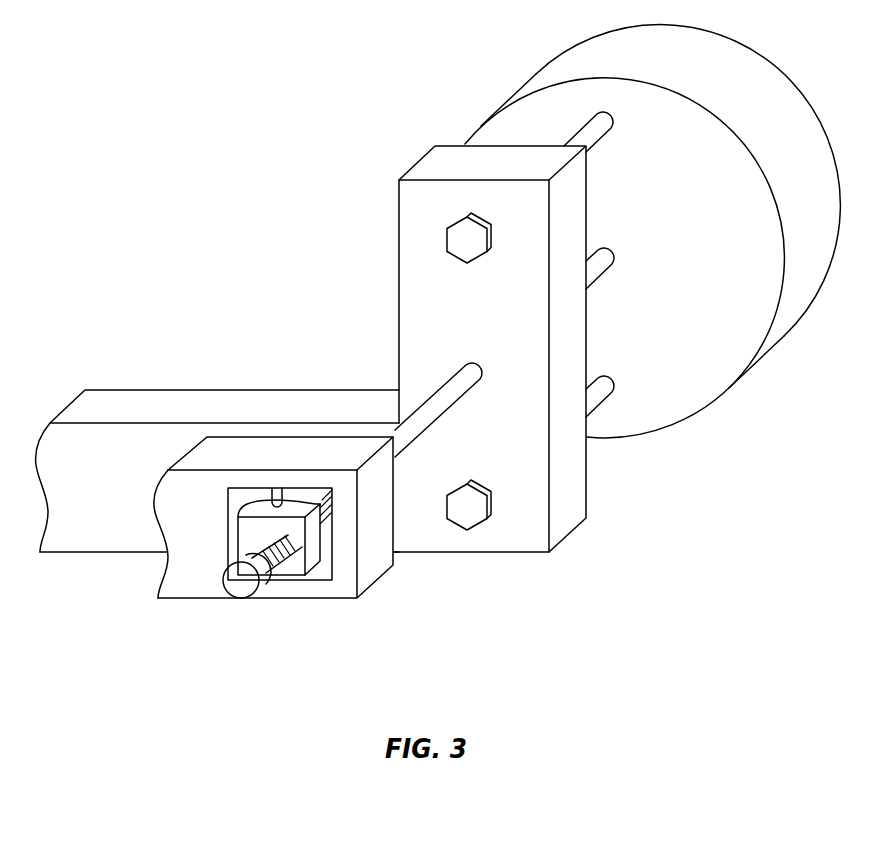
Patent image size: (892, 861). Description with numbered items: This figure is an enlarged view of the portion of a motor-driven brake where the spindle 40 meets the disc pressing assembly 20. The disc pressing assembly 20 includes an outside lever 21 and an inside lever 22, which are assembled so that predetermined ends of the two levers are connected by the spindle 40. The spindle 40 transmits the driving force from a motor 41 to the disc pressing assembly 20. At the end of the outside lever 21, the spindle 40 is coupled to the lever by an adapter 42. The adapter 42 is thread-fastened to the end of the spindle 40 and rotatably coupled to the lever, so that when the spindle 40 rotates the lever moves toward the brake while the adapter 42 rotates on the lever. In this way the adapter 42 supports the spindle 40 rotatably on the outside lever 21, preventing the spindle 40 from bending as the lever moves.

The disc pressing assembly 20 is at (132, 253).
The outside lever 21 is at (205, 477).
The inside lever 22 is at (137, 403).
The spindle 40 is at (438, 398).
The motor 41 is at (695, 380).
The adapter 42 is at (300, 558).